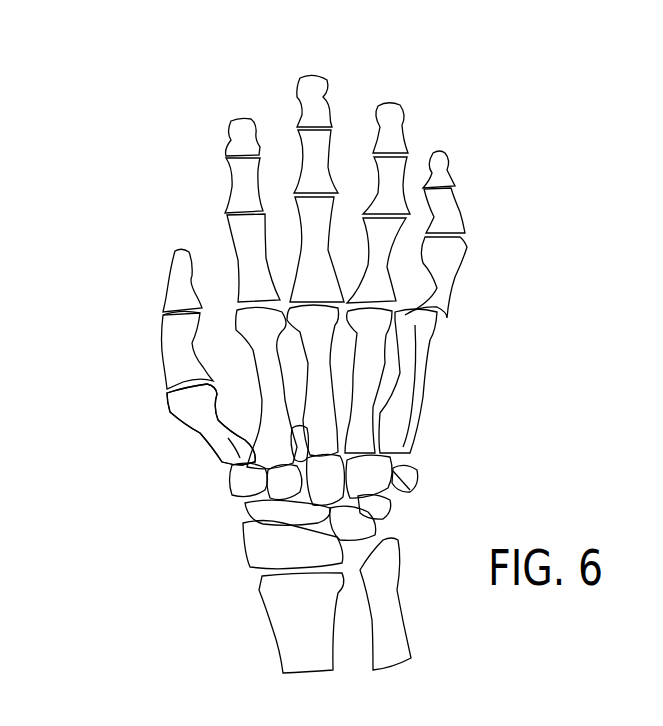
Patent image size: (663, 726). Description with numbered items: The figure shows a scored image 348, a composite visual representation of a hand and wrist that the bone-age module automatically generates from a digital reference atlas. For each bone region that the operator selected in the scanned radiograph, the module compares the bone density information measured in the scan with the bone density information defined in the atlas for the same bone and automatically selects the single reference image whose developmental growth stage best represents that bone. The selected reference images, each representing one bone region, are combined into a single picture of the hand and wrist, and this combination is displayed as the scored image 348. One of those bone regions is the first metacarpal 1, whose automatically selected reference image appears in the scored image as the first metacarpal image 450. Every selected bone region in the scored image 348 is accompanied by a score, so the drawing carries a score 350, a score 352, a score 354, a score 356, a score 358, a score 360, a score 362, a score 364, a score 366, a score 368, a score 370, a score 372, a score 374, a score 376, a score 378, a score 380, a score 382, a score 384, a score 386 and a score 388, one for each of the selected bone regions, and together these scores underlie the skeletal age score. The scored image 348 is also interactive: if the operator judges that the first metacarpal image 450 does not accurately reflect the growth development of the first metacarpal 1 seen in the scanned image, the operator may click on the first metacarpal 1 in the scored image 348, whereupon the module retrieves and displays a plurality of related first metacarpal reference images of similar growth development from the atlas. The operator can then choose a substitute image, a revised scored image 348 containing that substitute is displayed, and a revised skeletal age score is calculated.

The scored image 348 is at (535, 97).
The score 350 is at (197, 430).
The first metacarpal 1 is at (187, 430).
The score 352 is at (160, 355).
The score 354 is at (169, 312).
The score 356 is at (262, 392).
The score 358 is at (225, 227).
The score 360 is at (230, 180).
The score 362 is at (233, 123).
The score 364 is at (313, 417).
The score 366 is at (293, 195).
The score 368 is at (292, 135).
The score 370 is at (317, 83).
The score 372 is at (387, 415).
The score 374 is at (393, 273).
The score 376 is at (373, 185).
The score 378 is at (393, 107).
The score 380 is at (423, 370).
The score 382 is at (452, 323).
The score 384 is at (463, 220).
The score 386 is at (445, 150).
The score 388 is at (240, 530).
The first metacarpal image 450 is at (230, 475).